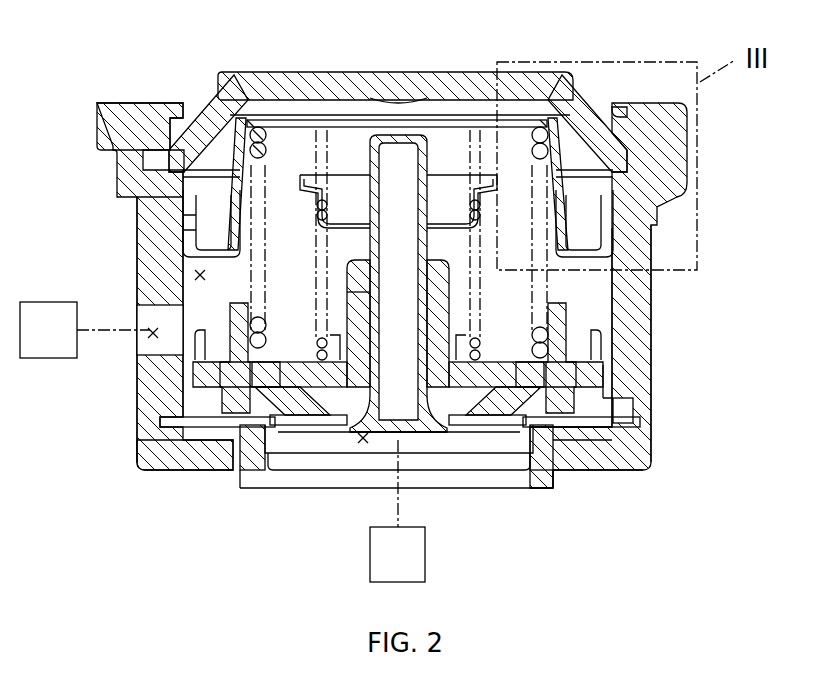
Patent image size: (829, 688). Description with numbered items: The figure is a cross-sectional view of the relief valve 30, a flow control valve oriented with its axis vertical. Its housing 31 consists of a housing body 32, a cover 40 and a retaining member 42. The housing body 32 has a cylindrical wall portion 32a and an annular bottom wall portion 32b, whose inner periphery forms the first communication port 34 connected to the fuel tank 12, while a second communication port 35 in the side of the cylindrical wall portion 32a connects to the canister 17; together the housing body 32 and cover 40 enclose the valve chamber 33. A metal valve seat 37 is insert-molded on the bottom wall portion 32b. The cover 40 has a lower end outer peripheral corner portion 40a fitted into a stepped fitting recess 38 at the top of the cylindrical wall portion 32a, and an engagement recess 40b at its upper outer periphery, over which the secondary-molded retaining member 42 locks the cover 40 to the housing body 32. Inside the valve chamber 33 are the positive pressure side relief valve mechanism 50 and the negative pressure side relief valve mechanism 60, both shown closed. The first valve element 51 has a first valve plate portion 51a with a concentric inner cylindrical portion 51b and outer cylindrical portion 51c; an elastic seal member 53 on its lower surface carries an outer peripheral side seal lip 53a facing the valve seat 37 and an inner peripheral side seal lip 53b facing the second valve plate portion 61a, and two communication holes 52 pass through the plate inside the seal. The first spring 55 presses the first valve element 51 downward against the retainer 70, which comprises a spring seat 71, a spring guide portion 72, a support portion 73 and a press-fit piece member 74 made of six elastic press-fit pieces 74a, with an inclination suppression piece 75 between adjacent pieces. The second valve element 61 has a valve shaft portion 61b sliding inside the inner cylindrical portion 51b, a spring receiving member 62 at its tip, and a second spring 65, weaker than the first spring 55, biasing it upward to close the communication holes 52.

The fuel tank 12 is at (370, 570).
The canister 17 is at (48, 358).
The relief valve 30 is at (100, 50).
The housing 31 is at (110, 200).
The housing body 32 is at (137, 238).
The cylindrical wall portion 32a is at (640, 365).
The bottom wall portion 32b is at (593, 462).
The valve chamber 33 is at (198, 275).
The first communication port 34 is at (363, 445).
The second communication port 35 is at (150, 335).
The valve seat 37 is at (183, 470).
The fitting recess 38 is at (685, 138).
The cover 40 is at (315, 72).
The lower end outer peripheral corner portion 40a is at (178, 157).
The engagement recess 40b is at (620, 112).
The retaining member 42 is at (100, 125).
The positive pressure side relief valve mechanism 50 is at (575, 318).
The first valve element 51 is at (570, 305).
The first valve plate portion 51a is at (605, 398).
The inner cylindrical portion 51b is at (345, 290).
The outer cylindrical portion 51c is at (560, 330).
The communication holes 52 is at (312, 420).
The seal member 53 is at (212, 397).
The outer peripheral side seal lip 53a is at (563, 455).
The inner peripheral side seal lip 53b is at (520, 428).
The first spring 55 is at (256, 128).
The negative pressure side relief valve mechanism 60 is at (445, 435).
The second valve element 61 is at (400, 135).
The second valve plate portion 61a is at (310, 432).
The valve shaft portion 61b is at (358, 177).
The spring receiving member 62 is at (472, 200).
The second spring 65 is at (280, 430).
The retainer 70 is at (545, 112).
The spring seat 71 is at (517, 122).
The spring guide portion 72 is at (610, 190).
The support portion 73 is at (213, 143).
The press-fit piece member 74 is at (612, 220).
The press-fit pieces 74a is at (605, 232).
The inclination suppression piece 75 is at (200, 220).